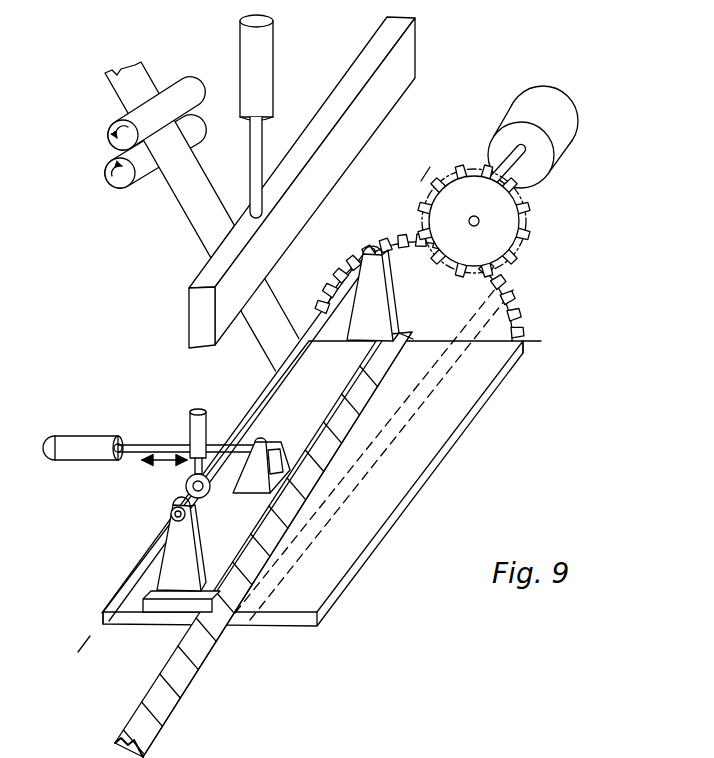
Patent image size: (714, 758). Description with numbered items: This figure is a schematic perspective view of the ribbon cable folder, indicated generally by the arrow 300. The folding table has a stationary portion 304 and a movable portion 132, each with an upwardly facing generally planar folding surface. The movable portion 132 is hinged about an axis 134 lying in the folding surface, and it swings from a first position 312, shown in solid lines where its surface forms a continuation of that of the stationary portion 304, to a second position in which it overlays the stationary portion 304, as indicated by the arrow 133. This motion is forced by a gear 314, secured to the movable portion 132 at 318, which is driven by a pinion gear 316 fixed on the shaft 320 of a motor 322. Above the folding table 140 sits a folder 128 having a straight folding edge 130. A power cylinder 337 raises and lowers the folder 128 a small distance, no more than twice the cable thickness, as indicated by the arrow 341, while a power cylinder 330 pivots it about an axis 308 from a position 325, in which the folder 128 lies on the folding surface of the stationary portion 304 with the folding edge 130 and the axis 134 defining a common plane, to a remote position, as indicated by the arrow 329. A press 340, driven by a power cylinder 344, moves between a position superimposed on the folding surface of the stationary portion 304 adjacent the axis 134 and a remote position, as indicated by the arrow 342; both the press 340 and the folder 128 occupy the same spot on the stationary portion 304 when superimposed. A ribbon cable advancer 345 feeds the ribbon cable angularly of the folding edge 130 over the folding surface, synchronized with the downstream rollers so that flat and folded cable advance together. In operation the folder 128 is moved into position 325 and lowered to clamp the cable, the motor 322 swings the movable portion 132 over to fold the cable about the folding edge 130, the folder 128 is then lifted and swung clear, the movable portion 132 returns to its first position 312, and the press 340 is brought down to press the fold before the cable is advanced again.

The folder 128 is at (239, 537).
The folding edge 130 is at (363, 402).
The movable portion 132 is at (477, 385).
The arrow 133 is at (314, 570).
The axis 134 is at (118, 728).
The folding table 140 is at (377, 562).
The apparatus 300 is at (558, 275).
The stationary portion 304 is at (110, 623).
The axis 308 is at (90, 625).
The first position 312 is at (434, 473).
The gear 314 is at (522, 313).
The pinion gear 316 is at (463, 176).
The securing point 318 is at (521, 350).
The shaft 320 is at (543, 172).
The motor 322 is at (563, 131).
The position 325 is at (178, 605).
The arrow 329 is at (182, 577).
The power cylinder 330 is at (84, 440).
The power cylinder 337 is at (190, 430).
The press 340 is at (188, 322).
The arrow 341 is at (200, 356).
The arrow 342 is at (436, 15).
The power cylinder 344 is at (264, 40).
The ribbon cable advancer 345 is at (190, 92).